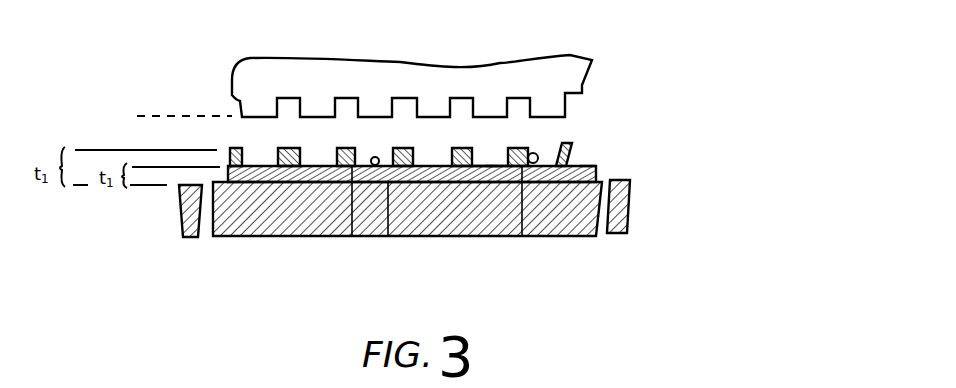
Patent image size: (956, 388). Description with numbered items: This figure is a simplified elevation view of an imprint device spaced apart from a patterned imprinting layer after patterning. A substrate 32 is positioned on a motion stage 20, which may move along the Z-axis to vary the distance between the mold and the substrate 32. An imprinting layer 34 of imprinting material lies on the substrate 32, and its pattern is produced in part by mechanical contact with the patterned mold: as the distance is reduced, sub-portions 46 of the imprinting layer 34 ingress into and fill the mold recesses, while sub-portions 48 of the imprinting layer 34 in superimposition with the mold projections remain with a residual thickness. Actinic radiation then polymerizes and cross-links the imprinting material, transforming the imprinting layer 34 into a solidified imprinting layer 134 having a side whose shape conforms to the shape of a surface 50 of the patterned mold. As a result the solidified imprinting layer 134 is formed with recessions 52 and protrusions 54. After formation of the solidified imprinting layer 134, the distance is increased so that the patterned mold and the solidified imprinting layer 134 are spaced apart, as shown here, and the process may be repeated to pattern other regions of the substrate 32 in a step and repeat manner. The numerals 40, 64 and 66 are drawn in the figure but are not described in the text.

The motion stage 20 is at (593, 58).
The surface 50 is at (168, 113).
The substrate 32 is at (643, 180).
The imprinting layer 34 is at (543, 166).
The dielectric layer 40 is at (413, 182).
The sub-portions 46 is at (352, 236).
The sub-portions 48 is at (552, 160).
The recessions 52 is at (492, 166).
The protrusions 54 is at (478, 152).
The contact pads 64 is at (342, 147).
The vias 66 is at (522, 236).
The solidified imprinting layer 134 is at (580, 167).